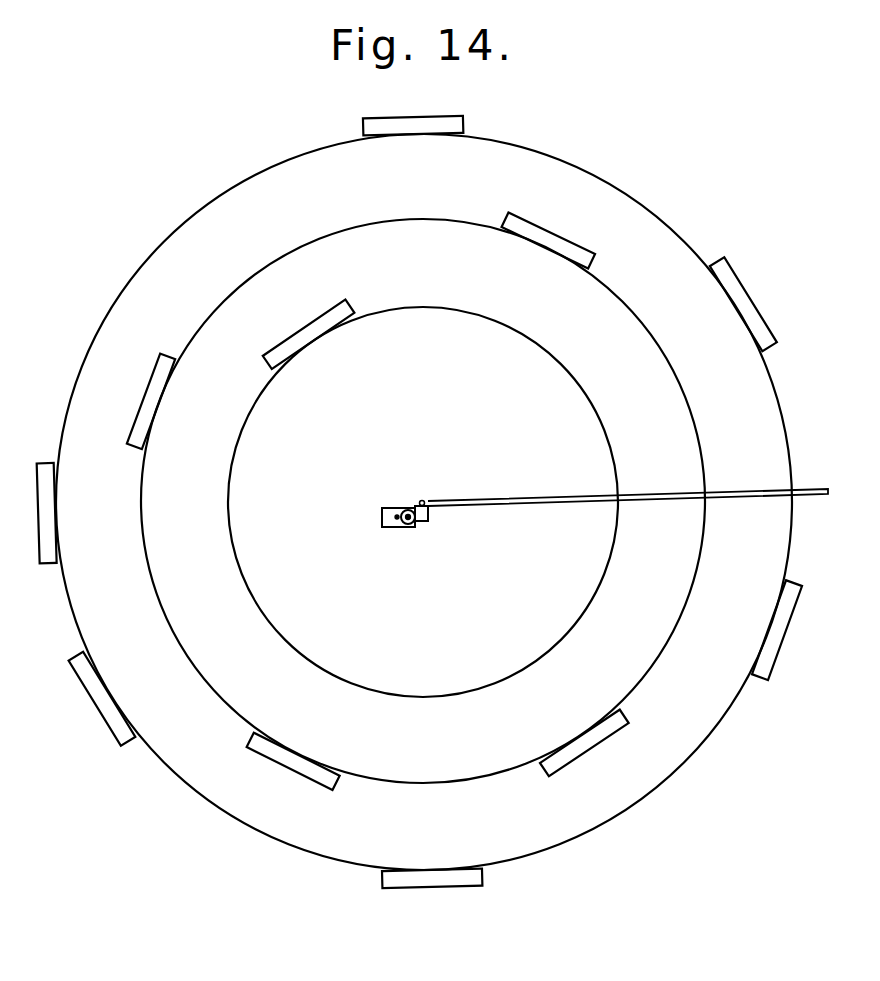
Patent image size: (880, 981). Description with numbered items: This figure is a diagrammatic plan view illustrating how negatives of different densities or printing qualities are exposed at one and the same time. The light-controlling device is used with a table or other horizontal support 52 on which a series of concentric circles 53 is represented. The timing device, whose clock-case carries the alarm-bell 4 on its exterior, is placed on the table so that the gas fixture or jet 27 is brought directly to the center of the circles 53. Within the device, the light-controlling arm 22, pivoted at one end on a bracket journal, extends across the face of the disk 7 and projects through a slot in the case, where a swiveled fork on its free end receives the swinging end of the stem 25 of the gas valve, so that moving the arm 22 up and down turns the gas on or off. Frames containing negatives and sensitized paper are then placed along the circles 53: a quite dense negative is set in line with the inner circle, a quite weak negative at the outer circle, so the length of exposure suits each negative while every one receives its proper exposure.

The alarm-bell 4 is at (404, 526).
The disk 7 is at (395, 508).
The light-controlling arm 22 is at (424, 523).
The stem 25 is at (432, 518).
The gas fixture or jet 27 is at (425, 502).
The table or horizontal support 52 is at (423, 502).
The concentric circles 53 is at (162, 830).